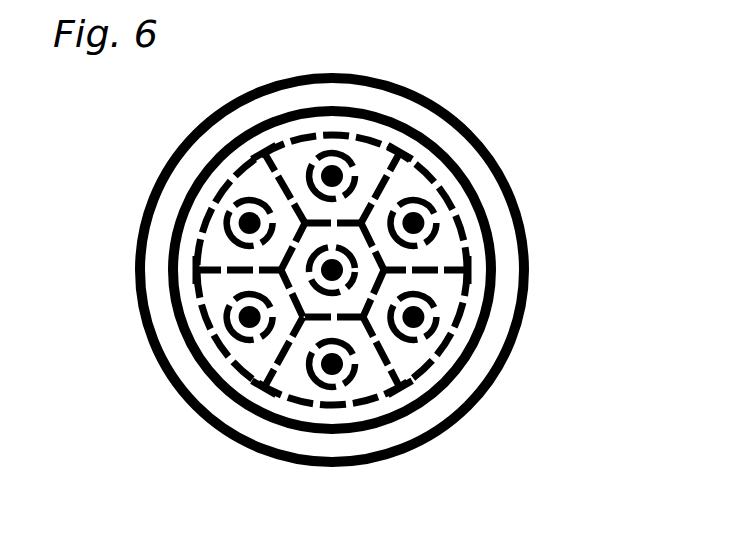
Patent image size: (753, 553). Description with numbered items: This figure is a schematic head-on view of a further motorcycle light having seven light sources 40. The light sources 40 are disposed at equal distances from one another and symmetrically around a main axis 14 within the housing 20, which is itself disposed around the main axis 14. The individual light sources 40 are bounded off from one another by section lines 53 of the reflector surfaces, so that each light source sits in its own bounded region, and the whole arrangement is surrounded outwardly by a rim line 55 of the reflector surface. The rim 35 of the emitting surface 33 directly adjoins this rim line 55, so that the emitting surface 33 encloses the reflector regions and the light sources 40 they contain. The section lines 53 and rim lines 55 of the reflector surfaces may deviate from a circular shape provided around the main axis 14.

The main axis 14 is at (341, 263).
The housing 20 is at (172, 333).
The emitting surface 33 is at (233, 170).
The rim 35 is at (370, 413).
The light sources 40 is at (415, 226).
The section lines 53 is at (376, 238).
The rim line 55 is at (245, 379).